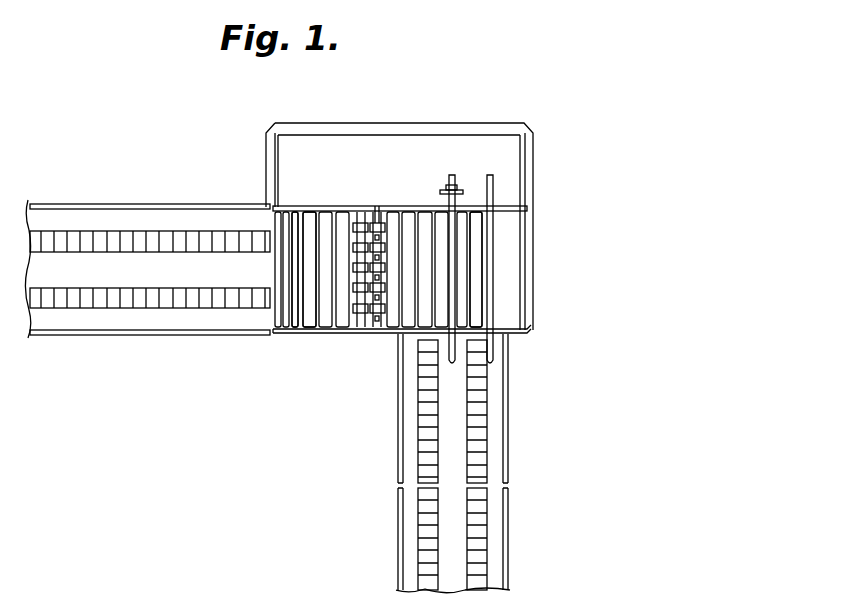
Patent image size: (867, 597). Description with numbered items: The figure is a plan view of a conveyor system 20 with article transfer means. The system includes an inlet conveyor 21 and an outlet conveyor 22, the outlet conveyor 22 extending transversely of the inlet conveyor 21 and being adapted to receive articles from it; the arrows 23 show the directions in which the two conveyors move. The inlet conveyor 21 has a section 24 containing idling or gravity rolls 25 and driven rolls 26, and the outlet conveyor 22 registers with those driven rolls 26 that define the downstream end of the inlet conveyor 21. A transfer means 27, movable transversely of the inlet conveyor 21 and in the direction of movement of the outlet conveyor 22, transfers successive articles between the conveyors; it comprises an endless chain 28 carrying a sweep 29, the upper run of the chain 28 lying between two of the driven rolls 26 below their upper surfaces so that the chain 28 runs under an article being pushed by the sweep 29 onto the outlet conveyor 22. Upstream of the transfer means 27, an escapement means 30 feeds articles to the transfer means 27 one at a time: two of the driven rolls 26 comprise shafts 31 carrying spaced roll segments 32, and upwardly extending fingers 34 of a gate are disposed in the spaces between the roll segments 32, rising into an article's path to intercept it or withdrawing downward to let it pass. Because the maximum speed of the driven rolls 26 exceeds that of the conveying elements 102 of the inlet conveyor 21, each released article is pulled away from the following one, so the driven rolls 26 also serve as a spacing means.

The conveyor system 20 is at (447, 116).
The inlet conveyor 21 is at (147, 286).
The outlet conveyor 22 is at (389, 494).
The arrows 23 is at (113, 270).
The section 24 is at (324, 342).
The idling or gravity rolls 25 is at (297, 334).
The driven rolls 26 is at (314, 216).
The transfer means 27 is at (460, 184).
The endless chain 28 is at (446, 258).
The sweep 29 is at (443, 190).
The escapement means 30 is at (373, 279).
The shafts 31 is at (350, 272).
The roll segments 32 is at (356, 227).
The fingers 34 is at (376, 214).
The conveying elements 102 is at (235, 288).